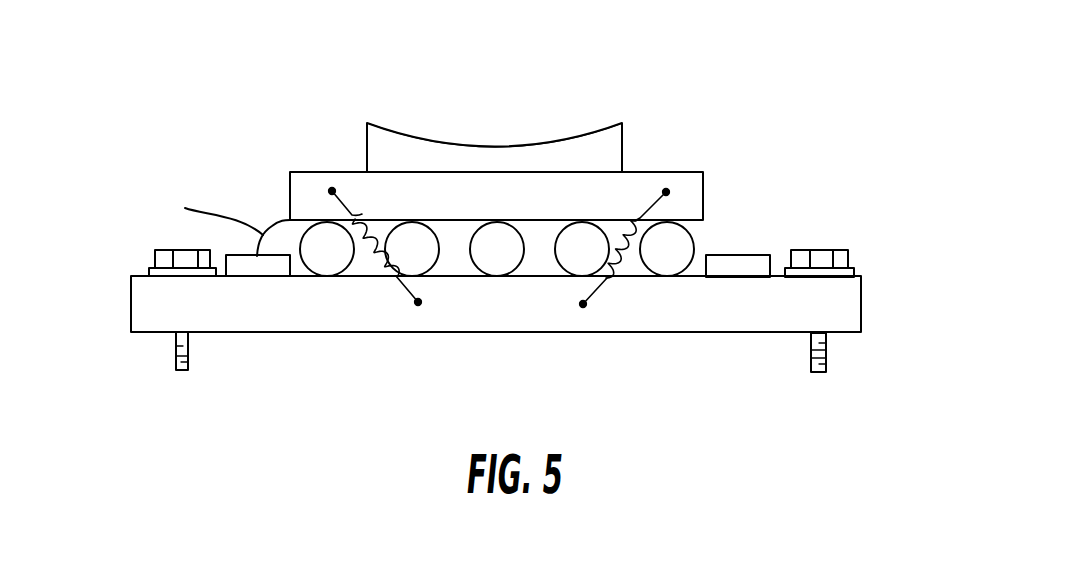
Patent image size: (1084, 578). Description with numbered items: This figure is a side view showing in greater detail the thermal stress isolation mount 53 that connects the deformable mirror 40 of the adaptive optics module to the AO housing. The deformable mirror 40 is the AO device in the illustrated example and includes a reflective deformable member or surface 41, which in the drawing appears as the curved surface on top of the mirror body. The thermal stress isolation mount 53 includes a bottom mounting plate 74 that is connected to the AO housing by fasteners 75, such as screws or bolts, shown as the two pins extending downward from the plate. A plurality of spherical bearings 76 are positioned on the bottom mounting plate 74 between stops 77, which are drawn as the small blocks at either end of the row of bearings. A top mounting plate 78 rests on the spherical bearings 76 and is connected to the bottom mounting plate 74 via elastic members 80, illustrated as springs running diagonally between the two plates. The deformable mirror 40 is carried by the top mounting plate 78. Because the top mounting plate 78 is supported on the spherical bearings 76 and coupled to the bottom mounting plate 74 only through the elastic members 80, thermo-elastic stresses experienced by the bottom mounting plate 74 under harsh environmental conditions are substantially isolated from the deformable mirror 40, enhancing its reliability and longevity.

The thermal stress isolation mount 53 is at (242, 175).
The reflective deformable member 41 is at (465, 145).
The deformable mirror 40 is at (622, 147).
The top mounting plate 78 is at (703, 188).
The spherical bearings 76 is at (697, 249).
The stops 77 is at (765, 253).
The bottom mounting plate 74 is at (860, 290).
The fasteners 75 is at (172, 360).
The elastic members 80 is at (378, 245).